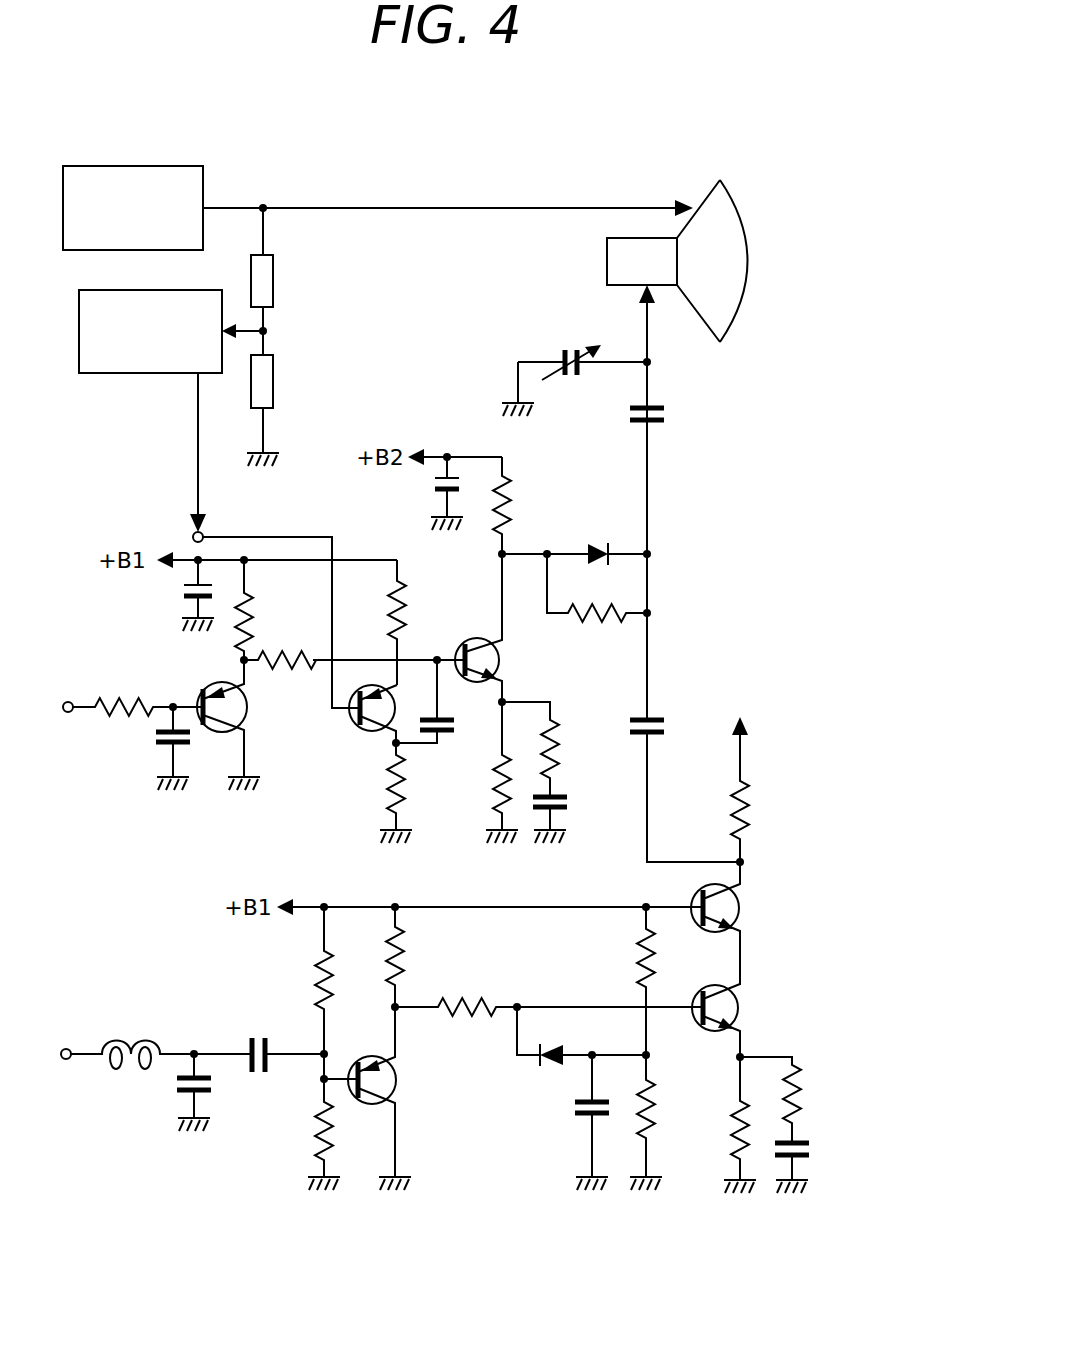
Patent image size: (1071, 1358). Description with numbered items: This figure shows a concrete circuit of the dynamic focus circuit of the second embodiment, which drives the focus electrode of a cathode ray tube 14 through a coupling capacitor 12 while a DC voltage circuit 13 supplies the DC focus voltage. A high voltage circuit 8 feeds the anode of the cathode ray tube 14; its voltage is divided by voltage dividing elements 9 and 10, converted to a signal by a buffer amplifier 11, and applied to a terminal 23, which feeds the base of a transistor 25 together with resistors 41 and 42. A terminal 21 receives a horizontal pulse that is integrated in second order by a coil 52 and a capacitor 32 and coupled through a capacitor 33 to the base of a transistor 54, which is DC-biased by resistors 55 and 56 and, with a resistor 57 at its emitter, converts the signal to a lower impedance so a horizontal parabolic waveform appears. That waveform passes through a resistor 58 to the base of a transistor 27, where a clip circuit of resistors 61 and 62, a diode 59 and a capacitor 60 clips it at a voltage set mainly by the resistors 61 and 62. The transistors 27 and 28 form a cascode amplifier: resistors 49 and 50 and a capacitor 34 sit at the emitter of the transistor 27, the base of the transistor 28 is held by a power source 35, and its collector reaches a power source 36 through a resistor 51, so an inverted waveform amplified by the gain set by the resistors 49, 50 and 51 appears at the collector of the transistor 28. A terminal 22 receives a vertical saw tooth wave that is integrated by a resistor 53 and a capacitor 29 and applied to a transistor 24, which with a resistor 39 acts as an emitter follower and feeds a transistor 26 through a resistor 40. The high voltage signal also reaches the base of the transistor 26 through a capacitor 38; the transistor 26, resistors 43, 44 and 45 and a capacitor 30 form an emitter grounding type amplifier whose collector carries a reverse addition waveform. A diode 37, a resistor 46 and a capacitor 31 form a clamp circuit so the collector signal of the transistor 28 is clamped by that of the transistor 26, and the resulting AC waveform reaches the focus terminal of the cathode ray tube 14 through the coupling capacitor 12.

The high voltage circuit 8 is at (205, 186).
The voltage dividing element 9 is at (275, 283).
The voltage dividing element 10 is at (275, 386).
The buffer amplifier 11 is at (115, 375).
The coupling capacitor 12 is at (670, 414).
The DC voltage circuit 13 is at (571, 380).
The cathode ray tube 14 is at (690, 160).
The terminal 21 is at (67, 1060).
The terminal 22 is at (68, 713).
The terminal 23 is at (190, 534).
The transistor 24 is at (250, 718).
The transistor 25 is at (398, 702).
The transistor 26 is at (505, 661).
The transistor 27 is at (745, 1011).
The transistor 28 is at (745, 911).
The capacitor 29 is at (160, 754).
The capacitor 30 is at (572, 808).
The capacitor 31 is at (660, 742).
The capacitor 32 is at (215, 1090).
The capacitor 33 is at (245, 1038).
The capacitor 34 is at (813, 1150).
The power source 35 is at (182, 601).
The power source 36 is at (429, 491).
The diode 37 is at (602, 542).
The capacitor 38 is at (459, 726).
The resistor 39 is at (262, 614).
The resistor 40 is at (302, 676).
The resistor 41 is at (384, 792).
The resistor 42 is at (408, 600).
The resistor 43 is at (492, 789).
The resistor 44 is at (563, 760).
The resistor 45 is at (515, 496).
The resistor 46 is at (600, 632).
The resistor 49 is at (726, 1131).
The resistor 50 is at (808, 1098).
The resistor 51 is at (760, 812).
The coil 52 is at (121, 1039).
The resistor 53 is at (107, 695).
The transistor 54 is at (398, 1088).
The resistor 55 is at (306, 976).
The resistor 56 is at (310, 1138).
The resistor 57 is at (415, 963).
The resistor 58 is at (468, 1026).
The diode 59 is at (532, 1064).
The capacitor 60 is at (566, 1113).
The resistor 61 is at (631, 952).
The resistor 62 is at (666, 1098).